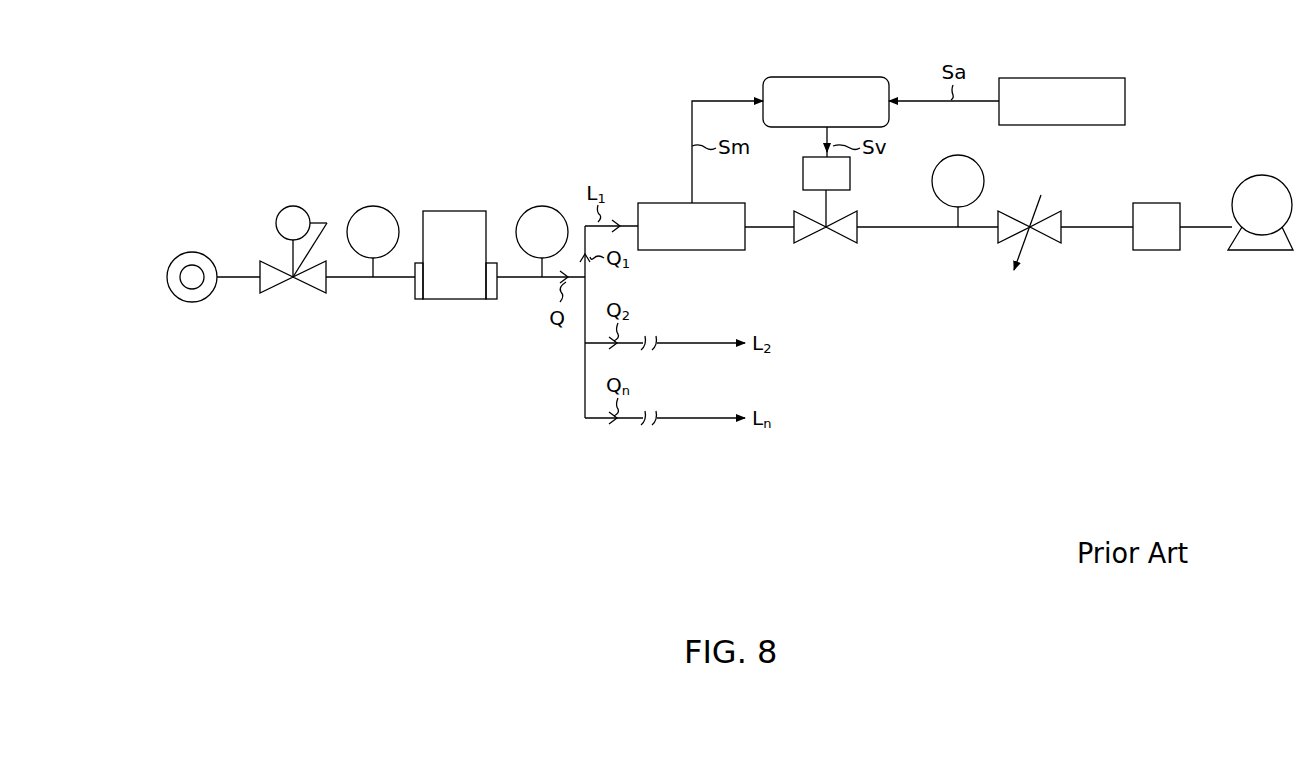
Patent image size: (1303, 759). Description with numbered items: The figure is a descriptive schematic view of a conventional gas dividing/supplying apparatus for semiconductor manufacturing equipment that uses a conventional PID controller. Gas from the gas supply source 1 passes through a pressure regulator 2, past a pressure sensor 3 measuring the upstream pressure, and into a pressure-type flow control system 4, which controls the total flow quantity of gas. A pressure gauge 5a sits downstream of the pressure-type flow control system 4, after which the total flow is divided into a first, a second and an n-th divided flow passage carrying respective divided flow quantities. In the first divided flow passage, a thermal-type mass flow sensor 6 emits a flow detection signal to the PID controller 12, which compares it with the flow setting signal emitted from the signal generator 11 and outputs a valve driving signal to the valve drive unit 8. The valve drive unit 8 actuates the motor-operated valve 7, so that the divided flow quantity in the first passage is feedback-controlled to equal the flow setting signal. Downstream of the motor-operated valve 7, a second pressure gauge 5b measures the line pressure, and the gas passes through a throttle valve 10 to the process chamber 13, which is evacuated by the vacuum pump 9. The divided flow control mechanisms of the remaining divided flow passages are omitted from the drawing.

The gas supply source 1 is at (192, 251).
The pressure regulator 2 is at (293, 205).
The pressure sensor 3 is at (372, 205).
The pressure-type flow control system 4 is at (456, 210).
The pressure gauge 5a is at (542, 205).
The pressure gauge 5b is at (958, 155).
The thermal-type mass flow sensor 6 is at (692, 252).
The motor-operated valve 7 is at (826, 245).
The valve drive unit 8 is at (802, 175).
The vacuum pump 9 is at (1262, 176).
The throttle valve 10 is at (1046, 243).
The signal generator 11 is at (1060, 76).
The PID controller 12 is at (828, 76).
The process chamber 13 is at (1156, 202).